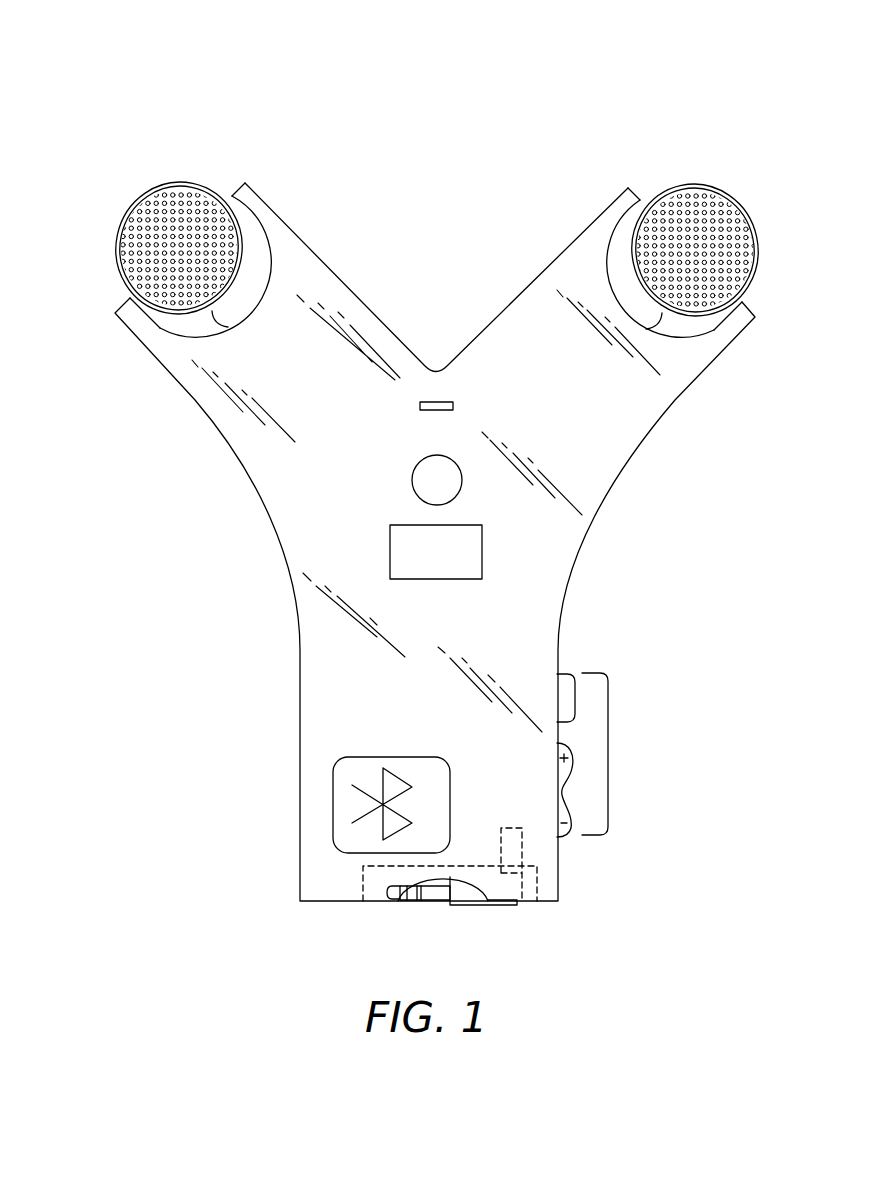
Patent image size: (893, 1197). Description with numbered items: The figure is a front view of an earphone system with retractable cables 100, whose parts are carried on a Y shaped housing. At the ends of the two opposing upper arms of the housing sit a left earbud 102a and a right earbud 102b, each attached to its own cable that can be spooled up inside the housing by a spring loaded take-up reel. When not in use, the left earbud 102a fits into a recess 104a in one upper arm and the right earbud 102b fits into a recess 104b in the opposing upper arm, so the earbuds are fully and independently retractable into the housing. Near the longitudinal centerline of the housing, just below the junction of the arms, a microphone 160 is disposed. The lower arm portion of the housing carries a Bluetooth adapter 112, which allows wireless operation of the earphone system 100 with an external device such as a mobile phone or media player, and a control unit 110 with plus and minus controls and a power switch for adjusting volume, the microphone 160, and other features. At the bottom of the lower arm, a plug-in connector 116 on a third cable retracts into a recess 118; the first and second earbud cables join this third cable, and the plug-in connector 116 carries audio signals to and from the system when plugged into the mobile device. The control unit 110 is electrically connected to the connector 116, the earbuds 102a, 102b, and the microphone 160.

The earphone system with retractable cables 100 is at (118, 80).
The left earbud 102a is at (135, 199).
The right earbud 102b is at (745, 200).
The recess 104a is at (254, 273).
The recess 104b is at (621, 270).
The control unit 110 is at (609, 753).
The Bluetooth adapter 112 is at (393, 755).
The plug-in connector 116 is at (483, 905).
The recess 118 is at (377, 907).
The microphone 160 is at (454, 406).